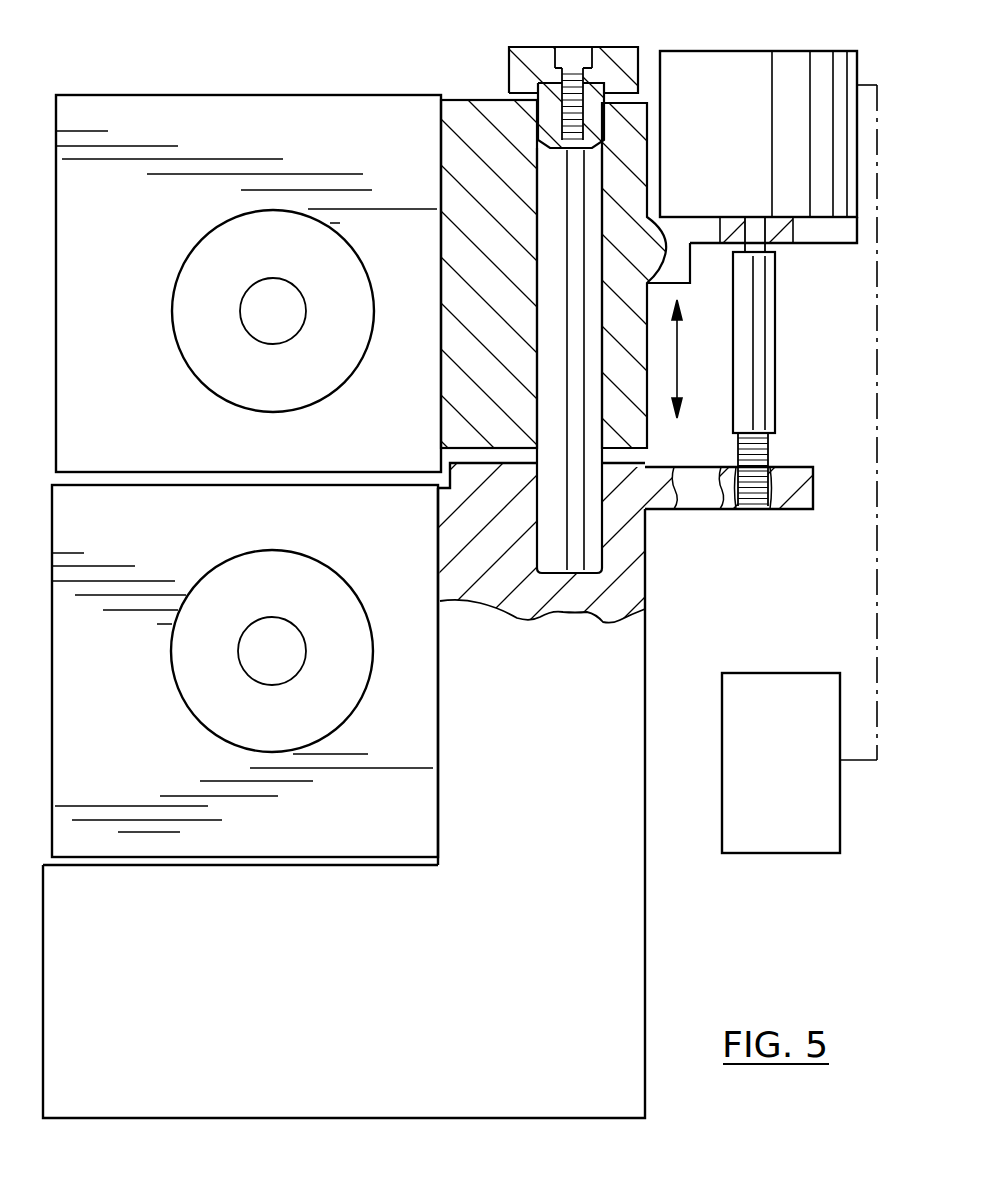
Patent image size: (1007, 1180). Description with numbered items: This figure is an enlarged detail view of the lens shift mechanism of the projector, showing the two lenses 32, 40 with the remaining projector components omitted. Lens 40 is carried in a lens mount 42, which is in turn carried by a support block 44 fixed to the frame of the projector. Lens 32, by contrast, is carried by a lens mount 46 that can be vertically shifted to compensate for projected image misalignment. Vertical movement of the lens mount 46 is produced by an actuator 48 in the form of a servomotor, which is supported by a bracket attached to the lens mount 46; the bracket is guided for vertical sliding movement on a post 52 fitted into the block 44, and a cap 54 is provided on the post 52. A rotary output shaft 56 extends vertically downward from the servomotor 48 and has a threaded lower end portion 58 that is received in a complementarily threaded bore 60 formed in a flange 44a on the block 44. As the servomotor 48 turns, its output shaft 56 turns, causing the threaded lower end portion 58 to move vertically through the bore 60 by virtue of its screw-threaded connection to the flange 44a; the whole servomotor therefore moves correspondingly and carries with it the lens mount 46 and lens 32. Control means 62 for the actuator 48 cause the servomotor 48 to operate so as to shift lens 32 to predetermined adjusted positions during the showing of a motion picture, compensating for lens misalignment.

The lens 32 is at (178, 348).
The lens 40 is at (192, 714).
The lens mount 42 is at (358, 815).
The support block 44 is at (515, 1007).
The flange 44a is at (803, 467).
The lens mount 46 is at (385, 419).
The actuator 48 is at (713, 46).
The post 52 is at (552, 192).
The cap 54 is at (533, 47).
The rotary output shaft 56 is at (755, 227).
The threaded lower end portion 58 is at (746, 506).
The threaded bore 60 is at (762, 488).
The control means 62 is at (784, 776).